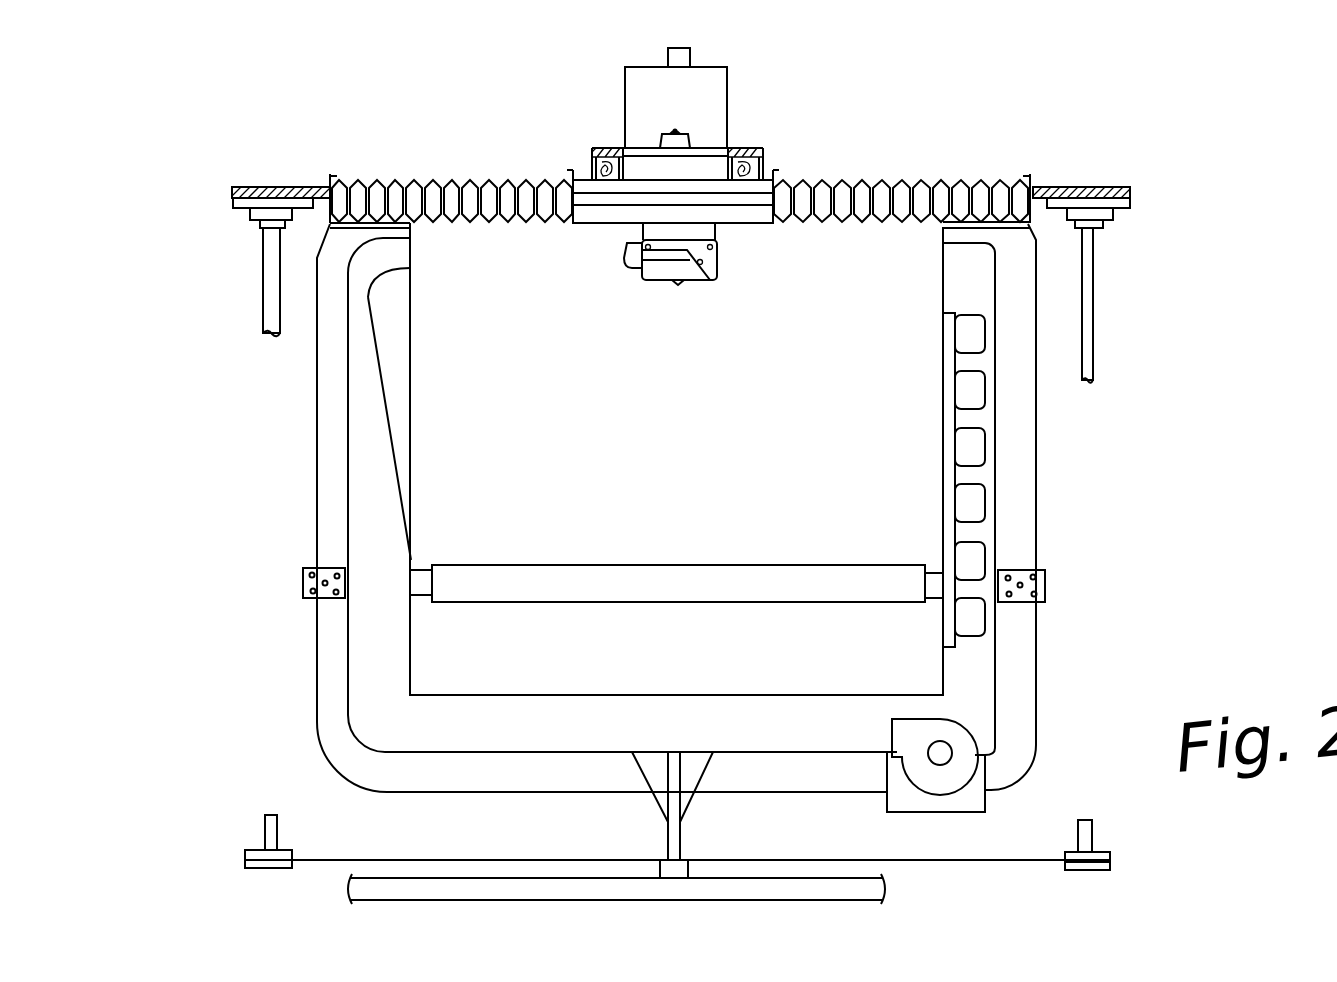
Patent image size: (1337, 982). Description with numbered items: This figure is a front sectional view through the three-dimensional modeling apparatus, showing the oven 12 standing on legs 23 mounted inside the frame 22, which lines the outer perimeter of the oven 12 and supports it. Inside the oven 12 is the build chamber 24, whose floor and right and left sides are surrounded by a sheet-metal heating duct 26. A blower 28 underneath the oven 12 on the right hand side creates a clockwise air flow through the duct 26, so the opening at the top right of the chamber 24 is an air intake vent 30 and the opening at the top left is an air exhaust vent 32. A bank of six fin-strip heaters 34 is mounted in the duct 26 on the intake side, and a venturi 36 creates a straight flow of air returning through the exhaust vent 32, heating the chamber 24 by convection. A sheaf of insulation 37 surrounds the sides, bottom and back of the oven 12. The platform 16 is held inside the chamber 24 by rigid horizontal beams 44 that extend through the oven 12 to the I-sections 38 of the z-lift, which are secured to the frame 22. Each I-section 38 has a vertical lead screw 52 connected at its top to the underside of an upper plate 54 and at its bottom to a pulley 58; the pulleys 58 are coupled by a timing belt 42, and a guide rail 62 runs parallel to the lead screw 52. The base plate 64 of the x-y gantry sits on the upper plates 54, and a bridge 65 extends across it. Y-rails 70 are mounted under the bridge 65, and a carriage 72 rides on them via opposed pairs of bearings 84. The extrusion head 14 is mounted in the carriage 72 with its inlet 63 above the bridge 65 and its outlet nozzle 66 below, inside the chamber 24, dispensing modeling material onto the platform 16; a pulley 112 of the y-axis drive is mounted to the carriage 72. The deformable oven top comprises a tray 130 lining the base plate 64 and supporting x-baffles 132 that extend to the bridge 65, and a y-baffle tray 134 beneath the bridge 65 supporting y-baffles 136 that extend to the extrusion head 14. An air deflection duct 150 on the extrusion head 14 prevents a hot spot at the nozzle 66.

The oven 12 is at (392, 644).
The extrusion head 14 is at (716, 80).
The platform 16 is at (648, 585).
The frame 22 is at (598, 895).
The legs 23 is at (690, 835).
The build chamber 24 is at (690, 434).
The heating duct 26 is at (965, 672).
The blower 28 is at (958, 770).
The air intake vent 30 is at (943, 262).
The air exhaust vent 32 is at (410, 270).
The fin-strip heaters 34 is at (975, 336).
The venturi 36 is at (368, 297).
The insulation 37 is at (333, 456).
The I-section 38 is at (236, 216).
The timing belt 42 is at (503, 860).
The beams 44 is at (325, 568).
The lead screw 52 is at (265, 826).
The upper plate 54 is at (240, 198).
The pulley 58 is at (250, 870).
The guide rail 62 is at (265, 290).
The inlet 63 is at (692, 50).
The base plate 64 is at (285, 187).
The bridge 65 is at (598, 148).
The outlet nozzle 66 is at (678, 284).
The y-rails 70 is at (596, 165).
The carriage 72 is at (640, 145).
The bearings 84 is at (573, 172).
The pulley 112 is at (690, 133).
The x-baffle tray 130 is at (332, 178).
The x-baffles 132 is at (415, 180).
The y-baffle tray 134 is at (595, 223).
The y-baffles 136 is at (725, 200).
The air deflection duct 150 is at (648, 280).